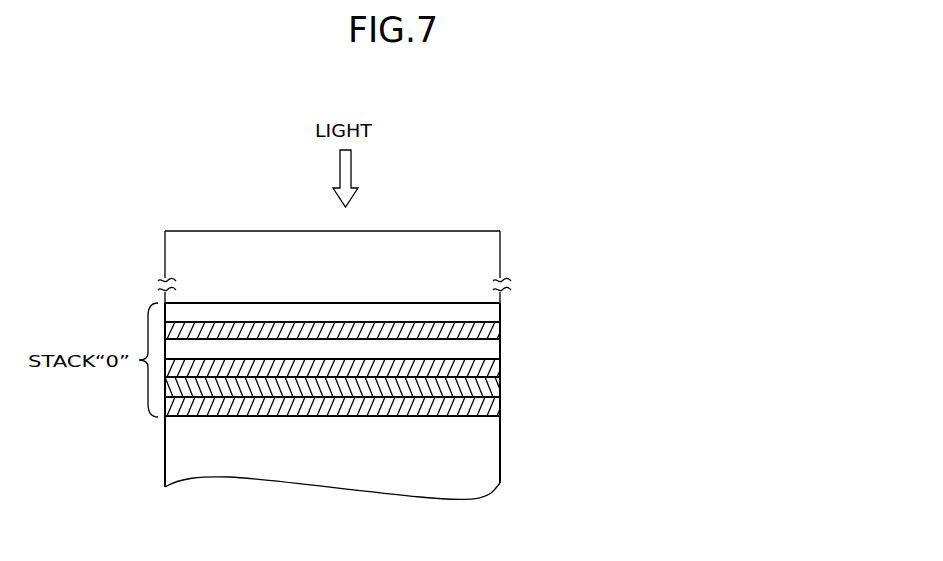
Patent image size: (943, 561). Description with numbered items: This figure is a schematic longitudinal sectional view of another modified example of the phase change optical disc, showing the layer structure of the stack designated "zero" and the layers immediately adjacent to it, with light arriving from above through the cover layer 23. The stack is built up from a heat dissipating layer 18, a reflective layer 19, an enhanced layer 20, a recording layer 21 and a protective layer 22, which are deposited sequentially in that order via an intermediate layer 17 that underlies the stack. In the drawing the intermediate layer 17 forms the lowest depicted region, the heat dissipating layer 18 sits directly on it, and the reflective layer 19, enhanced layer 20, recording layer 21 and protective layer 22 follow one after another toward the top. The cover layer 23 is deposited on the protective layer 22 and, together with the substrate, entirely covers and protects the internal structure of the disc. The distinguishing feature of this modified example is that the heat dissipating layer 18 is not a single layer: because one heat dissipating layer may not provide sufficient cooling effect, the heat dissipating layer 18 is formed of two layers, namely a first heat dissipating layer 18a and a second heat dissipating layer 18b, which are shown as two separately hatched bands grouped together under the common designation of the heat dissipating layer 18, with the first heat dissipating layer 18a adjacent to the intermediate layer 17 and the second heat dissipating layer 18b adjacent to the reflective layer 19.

The cover layer 23 is at (478, 258).
The protective layer 22 is at (486, 314).
The recording layer 21 is at (483, 328).
The enhanced layer 20 is at (486, 347).
The reflective layer 19 is at (486, 368).
The heat dissipating layer 18 is at (505, 434).
The second heat dissipating layer 18b is at (487, 388).
The first heat dissipating layer 18a is at (490, 408).
The intermediate layer 17 is at (482, 462).